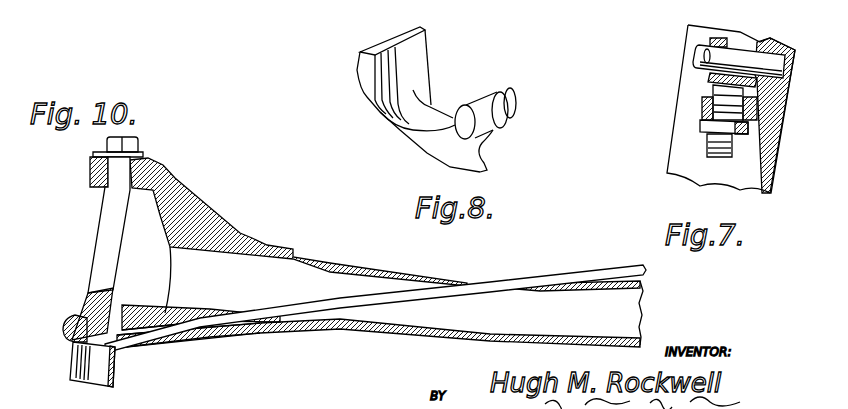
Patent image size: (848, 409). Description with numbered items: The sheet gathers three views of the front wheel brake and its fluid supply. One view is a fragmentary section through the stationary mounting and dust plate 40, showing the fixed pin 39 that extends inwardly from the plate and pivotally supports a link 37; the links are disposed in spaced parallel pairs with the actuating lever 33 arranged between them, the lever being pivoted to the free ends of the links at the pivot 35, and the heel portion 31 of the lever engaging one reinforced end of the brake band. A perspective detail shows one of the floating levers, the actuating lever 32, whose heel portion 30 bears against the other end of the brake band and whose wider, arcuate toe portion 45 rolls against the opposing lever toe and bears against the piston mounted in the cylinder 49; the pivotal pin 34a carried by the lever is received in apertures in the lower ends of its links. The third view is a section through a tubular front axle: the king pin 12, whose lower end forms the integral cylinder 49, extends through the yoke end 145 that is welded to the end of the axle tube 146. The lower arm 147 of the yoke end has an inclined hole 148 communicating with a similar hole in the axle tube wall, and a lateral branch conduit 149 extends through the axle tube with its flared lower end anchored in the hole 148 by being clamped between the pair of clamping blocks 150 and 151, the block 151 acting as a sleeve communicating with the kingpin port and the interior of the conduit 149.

In FIG. 10, the king pin 12 is at (107, 220).
In FIG. 10, the yoke end 145 is at (190, 207).
In FIG. 10, the axle tube 146 is at (378, 323).
In FIG. 10, the lower arm 147 is at (152, 353).
In FIG. 10, the inclined hole 148 is at (203, 337).
In FIG. 10, the lateral branch conduit 149 is at (403, 297).
In FIG. 10, the clamping block 150 is at (149, 312).
In FIG. 10, the clamping block 151 is at (128, 320).
In FIG. 10, the cylinder 49 is at (72, 362).
In FIG. 8, the toe portion 45 is at (410, 47).
In FIG. 8, the actuating lever 32 is at (430, 130).
In FIG. 8, the pivotal pin 34a is at (477, 120).
In FIG. 8, the heel portion 30 is at (488, 168).
In FIG. 7, the fixed pin 39 is at (735, 57).
In FIG. 7, the link 37 is at (708, 78).
In FIG. 7, the pivot 35 is at (703, 95).
In FIG. 7, the actuating lever 33 is at (710, 125).
In FIG. 7, the heel portion 31 is at (717, 143).
In FIG. 7, the mounting and dust plate 40 is at (770, 175).